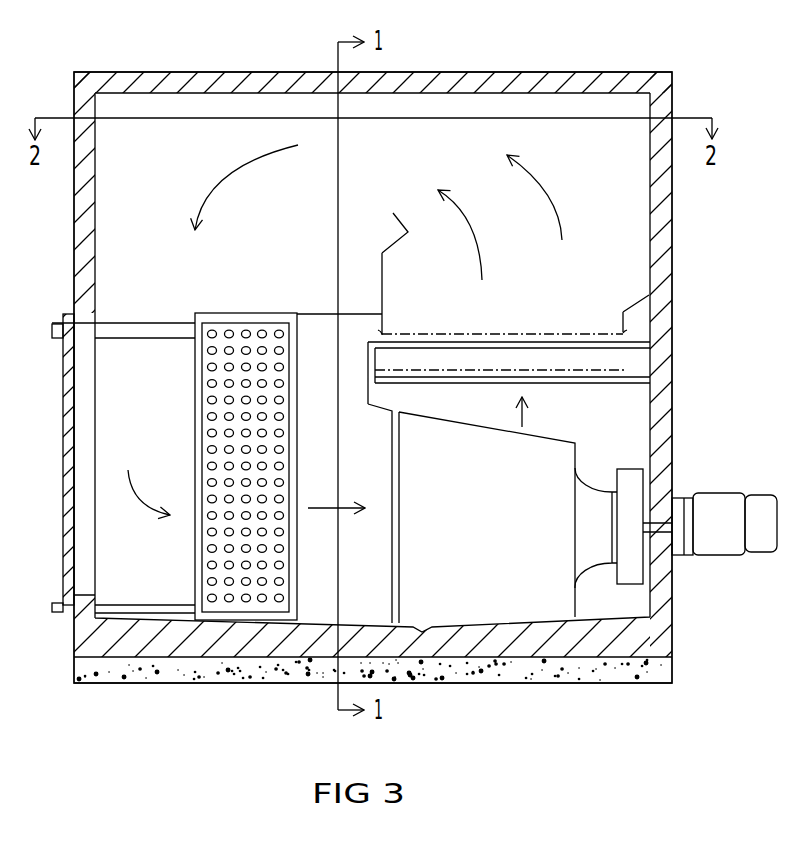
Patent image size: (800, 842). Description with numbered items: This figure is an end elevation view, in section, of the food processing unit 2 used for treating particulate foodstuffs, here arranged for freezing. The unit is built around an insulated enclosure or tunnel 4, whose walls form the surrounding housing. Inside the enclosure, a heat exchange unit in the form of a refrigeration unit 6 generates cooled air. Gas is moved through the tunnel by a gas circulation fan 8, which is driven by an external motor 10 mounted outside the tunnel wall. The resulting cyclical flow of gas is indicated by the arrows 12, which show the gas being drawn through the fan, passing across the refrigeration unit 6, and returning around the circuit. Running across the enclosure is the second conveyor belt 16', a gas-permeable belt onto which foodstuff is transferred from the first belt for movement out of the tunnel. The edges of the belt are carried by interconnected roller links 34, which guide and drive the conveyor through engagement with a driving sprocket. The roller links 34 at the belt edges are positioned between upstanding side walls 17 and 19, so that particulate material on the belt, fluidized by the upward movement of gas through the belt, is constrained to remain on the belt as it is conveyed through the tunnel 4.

The food processing unit 2 is at (712, 257).
The insulated enclosure or tunnel 4 is at (538, 86).
The refrigeration unit 6 is at (322, 348).
The gas circulation fan 8 is at (533, 468).
The external motor 10 is at (735, 545).
The arrows 12 is at (229, 182).
The second conveyor belt 16' is at (509, 336).
The upstanding side wall 17 is at (382, 298).
The upstanding side wall 19 is at (640, 295).
The roller links 34 is at (380, 331).